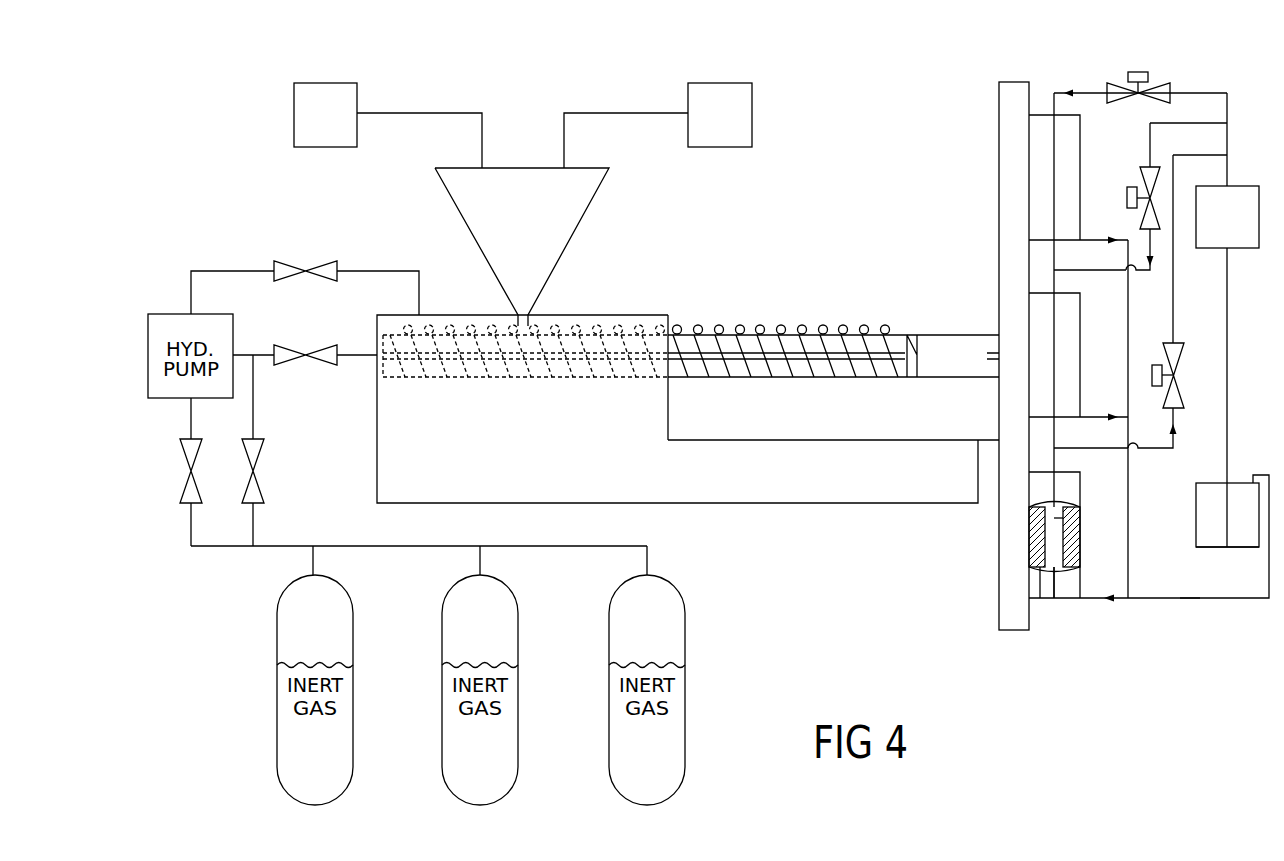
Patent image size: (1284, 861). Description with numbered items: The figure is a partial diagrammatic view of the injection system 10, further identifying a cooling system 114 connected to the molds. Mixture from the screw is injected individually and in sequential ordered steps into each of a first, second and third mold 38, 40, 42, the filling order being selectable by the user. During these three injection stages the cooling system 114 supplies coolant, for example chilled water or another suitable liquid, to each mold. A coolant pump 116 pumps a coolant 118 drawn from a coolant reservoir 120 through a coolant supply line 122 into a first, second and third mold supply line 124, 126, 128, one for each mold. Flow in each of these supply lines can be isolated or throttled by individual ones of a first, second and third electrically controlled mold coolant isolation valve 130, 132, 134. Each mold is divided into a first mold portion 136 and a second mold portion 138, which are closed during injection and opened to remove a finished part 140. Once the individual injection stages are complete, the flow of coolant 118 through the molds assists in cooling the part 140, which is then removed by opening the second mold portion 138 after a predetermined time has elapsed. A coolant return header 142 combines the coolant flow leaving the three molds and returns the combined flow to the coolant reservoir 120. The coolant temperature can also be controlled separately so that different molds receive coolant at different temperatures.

The extrusion system 10 is at (884, 90).
The cooling system 114 is at (1218, 78).
The third mold supply line 128 is at (1093, 90).
The third electrically controlled mold coolant isolation valve 134 is at (1163, 82).
The second mold supply line 126 is at (1150, 138).
The third mold 42 is at (1063, 174).
The second electrically controlled mold coolant isolation valve 132 is at (1140, 213).
The coolant pump 116 is at (1218, 230).
The second mold 40 is at (1063, 344).
The first mold supply line 124 is at (1175, 327).
The coolant supply line 122 is at (1229, 406).
The first electrically controlled mold coolant isolation valve 130 is at (1186, 398).
The coolant 118 is at (1210, 527).
The coolant reservoir 120 is at (1248, 556).
The coolant return header 142 is at (1193, 597).
The first mold 38 is at (1065, 531).
The finished part 140 is at (1058, 519).
The second mold portion 138 is at (1064, 592).
The first mold portion 136 is at (1040, 590).